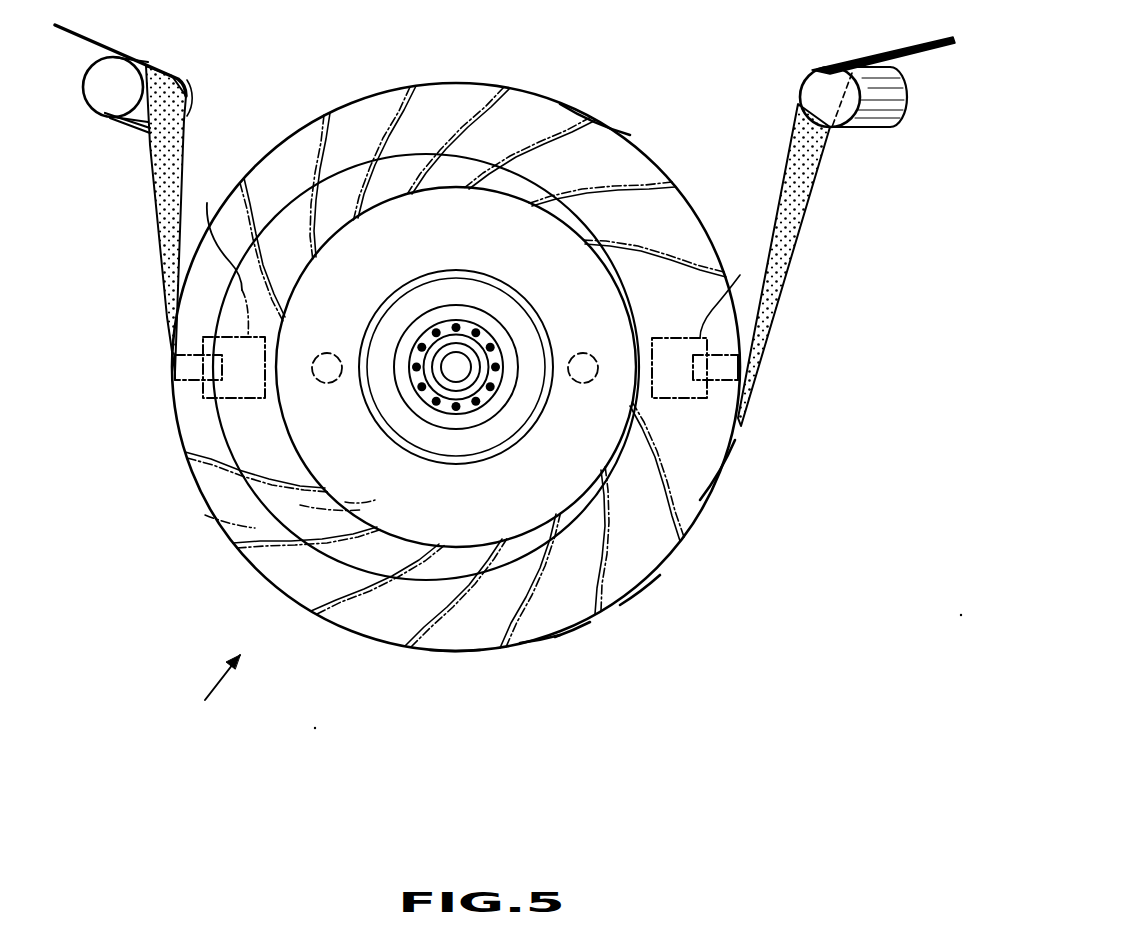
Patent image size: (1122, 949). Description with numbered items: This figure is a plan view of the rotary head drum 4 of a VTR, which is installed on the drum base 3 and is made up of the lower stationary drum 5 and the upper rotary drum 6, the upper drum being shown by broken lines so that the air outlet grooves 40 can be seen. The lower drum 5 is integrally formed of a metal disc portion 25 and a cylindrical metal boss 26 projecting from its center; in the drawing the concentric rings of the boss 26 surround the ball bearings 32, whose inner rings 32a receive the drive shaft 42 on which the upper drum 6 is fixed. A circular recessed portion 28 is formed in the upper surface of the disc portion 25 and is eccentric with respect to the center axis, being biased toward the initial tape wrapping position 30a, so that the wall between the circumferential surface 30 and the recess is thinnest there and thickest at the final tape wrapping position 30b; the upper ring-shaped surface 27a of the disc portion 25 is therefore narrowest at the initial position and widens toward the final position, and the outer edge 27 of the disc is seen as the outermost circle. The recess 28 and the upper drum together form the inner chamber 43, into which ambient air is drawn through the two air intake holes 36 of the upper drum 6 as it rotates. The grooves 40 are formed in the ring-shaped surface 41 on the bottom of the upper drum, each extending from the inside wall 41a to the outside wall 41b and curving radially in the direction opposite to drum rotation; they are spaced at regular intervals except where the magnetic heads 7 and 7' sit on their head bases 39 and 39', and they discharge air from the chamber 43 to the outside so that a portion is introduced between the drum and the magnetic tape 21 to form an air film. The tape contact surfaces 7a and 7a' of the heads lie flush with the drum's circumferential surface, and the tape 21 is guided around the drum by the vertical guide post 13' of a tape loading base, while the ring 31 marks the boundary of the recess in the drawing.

The drum base 3 is at (107, 113).
The rotary head drum 4 is at (168, 755).
The lower stationary drum 5 is at (640, 588).
The upper rotary drum 6 is at (597, 118).
The magnetic head 7 is at (202, 404).
The magnetic head 7' is at (717, 408).
The tape contact surface 7a is at (158, 391).
The tape contact surface 7a' is at (759, 351).
The vertical guide post 13' is at (877, 101).
The magnetic tape 21 is at (160, 195).
The disc portion 25 is at (710, 495).
The cylindrical metal boss 26 is at (522, 290).
The rim flange 27 is at (540, 655).
The ring-shaped surface 27a is at (572, 640).
The recessed portion 28 is at (300, 607).
The circumferential surface 30 is at (456, 652).
The initial tape wrapping position 30a is at (175, 357).
The final tape wrapping position 30b is at (745, 408).
The shroud ring 31 is at (220, 437).
The ball bearings 32 is at (437, 310).
The inner rings 32a is at (487, 378).
The air intake holes 36 is at (325, 353).
The head base 39 is at (218, 256).
The head base 39' is at (731, 290).
The grooves 40 is at (416, 84).
The ring-shaped surface 41 is at (332, 515).
The inside wall 41a is at (360, 500).
The outside wall 41b is at (215, 518).
The drive shaft 42 is at (462, 380).
The inner chamber 43 is at (382, 273).